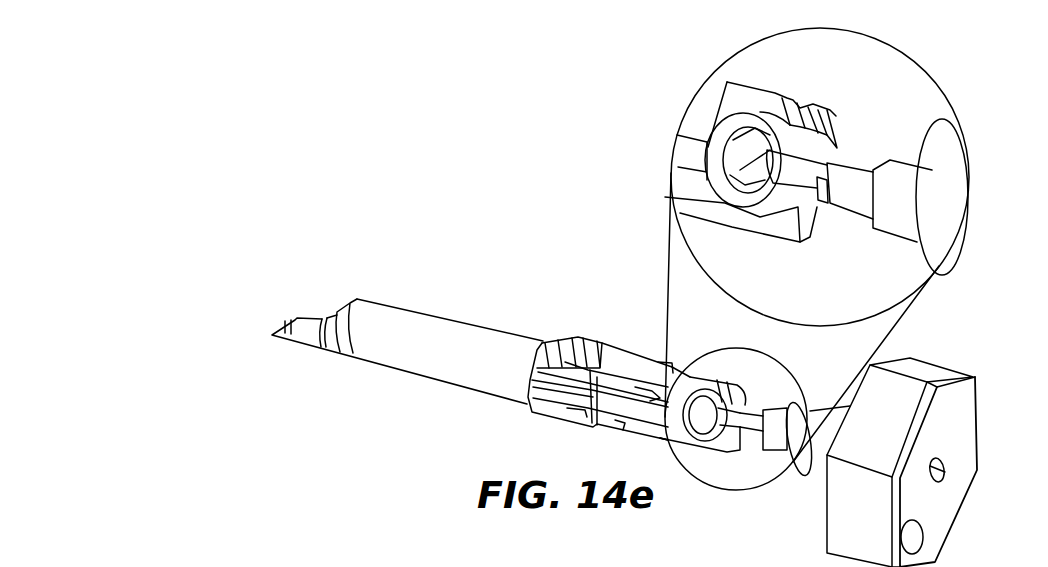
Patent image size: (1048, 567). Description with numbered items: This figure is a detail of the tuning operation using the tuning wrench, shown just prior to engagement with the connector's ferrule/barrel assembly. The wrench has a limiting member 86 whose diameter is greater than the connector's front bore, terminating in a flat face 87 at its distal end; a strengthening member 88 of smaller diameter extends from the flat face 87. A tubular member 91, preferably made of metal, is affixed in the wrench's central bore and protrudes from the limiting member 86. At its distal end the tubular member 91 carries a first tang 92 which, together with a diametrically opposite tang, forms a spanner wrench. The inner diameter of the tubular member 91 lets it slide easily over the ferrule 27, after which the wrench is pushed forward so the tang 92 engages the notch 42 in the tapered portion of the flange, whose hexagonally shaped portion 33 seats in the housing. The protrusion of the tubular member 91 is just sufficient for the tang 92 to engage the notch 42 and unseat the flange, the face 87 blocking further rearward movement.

The ferrule 27 is at (800, 167).
The hexagonally shaped portion 33 is at (733, 152).
The notch 42 is at (733, 197).
The limiting member 86 is at (812, 467).
The flat face 87 is at (947, 147).
The strengthening member 88 is at (773, 443).
The tubular member 91 is at (753, 420).
The first tang 92 is at (823, 230).